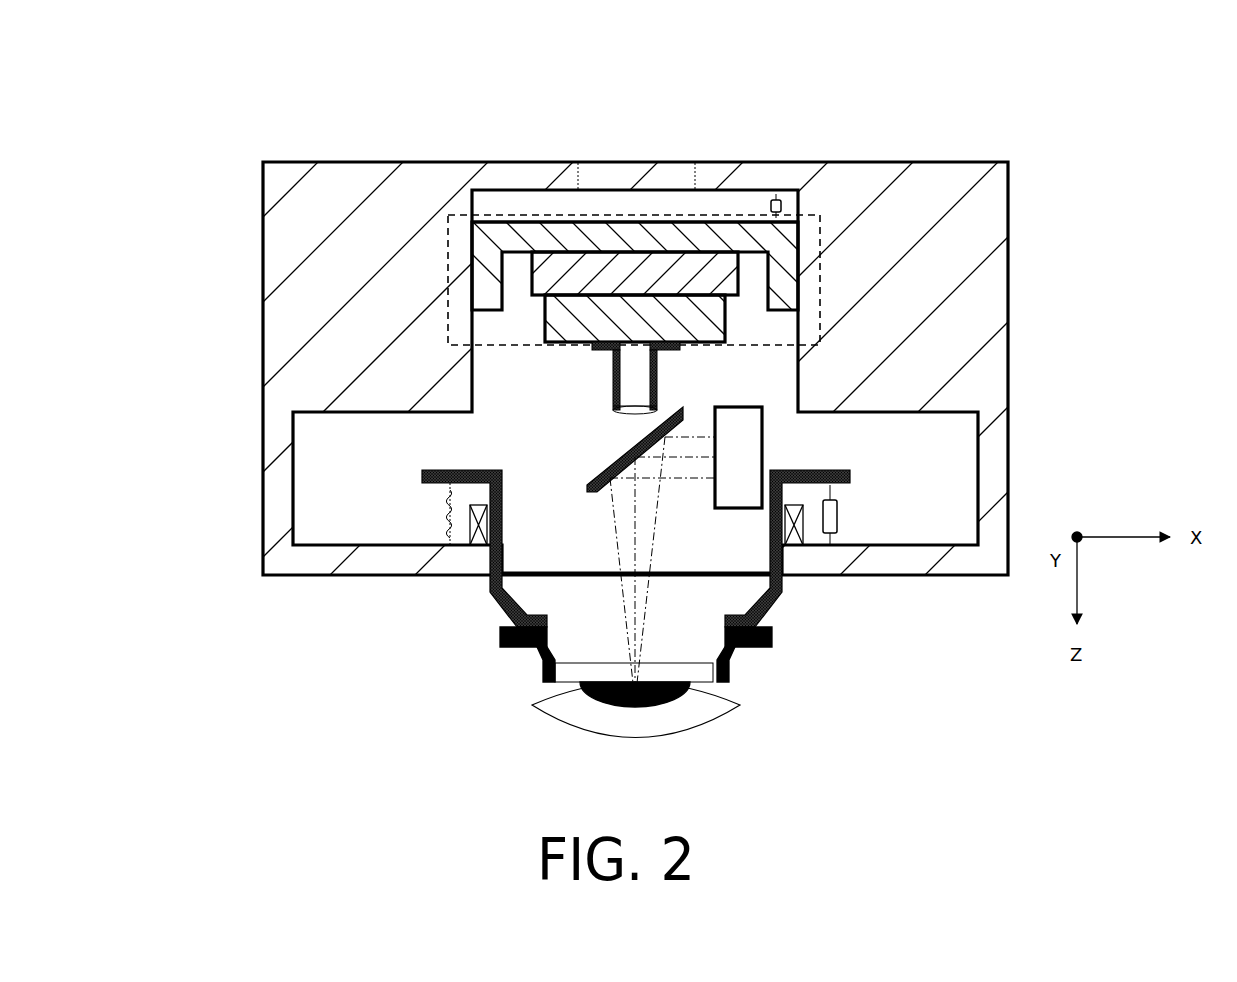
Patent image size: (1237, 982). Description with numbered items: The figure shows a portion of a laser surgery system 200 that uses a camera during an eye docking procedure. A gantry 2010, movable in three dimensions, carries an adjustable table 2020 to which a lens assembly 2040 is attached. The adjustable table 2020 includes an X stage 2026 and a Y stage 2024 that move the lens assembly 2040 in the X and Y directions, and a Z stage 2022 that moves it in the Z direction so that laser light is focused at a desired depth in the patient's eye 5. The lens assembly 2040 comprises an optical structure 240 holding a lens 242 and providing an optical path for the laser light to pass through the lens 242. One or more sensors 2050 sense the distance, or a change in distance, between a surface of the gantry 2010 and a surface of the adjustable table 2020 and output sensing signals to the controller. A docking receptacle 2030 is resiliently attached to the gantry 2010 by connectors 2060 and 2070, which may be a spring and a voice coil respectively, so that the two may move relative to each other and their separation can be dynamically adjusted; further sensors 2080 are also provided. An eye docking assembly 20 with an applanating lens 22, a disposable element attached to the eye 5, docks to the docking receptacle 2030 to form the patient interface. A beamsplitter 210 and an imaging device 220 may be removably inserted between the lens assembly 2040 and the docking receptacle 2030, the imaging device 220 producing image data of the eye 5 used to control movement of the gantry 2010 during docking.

The laser surgery system 200 is at (1122, 103).
The gantry 2010 is at (263, 245).
The adjustable table 2020 is at (752, 346).
The Z stage 2022 is at (543, 222).
The Y stage 2024 is at (527, 273).
The X stage 2026 is at (572, 346).
The optical structure 240 is at (658, 381).
The lens 242 is at (612, 410).
The sensor 2050 is at (768, 206).
The beamsplitter 210 is at (590, 491).
The lens assembly 2040 is at (598, 428).
The imaging device 220 is at (763, 432).
The docking receptacle 2030 is at (775, 600).
The connector 2060 is at (433, 513).
The connector 2070 is at (482, 506).
The sensor 2080 is at (843, 515).
The eye docking assembly 20 is at (520, 667).
The applanating lens 22 is at (598, 663).
The eye 5 is at (700, 728).